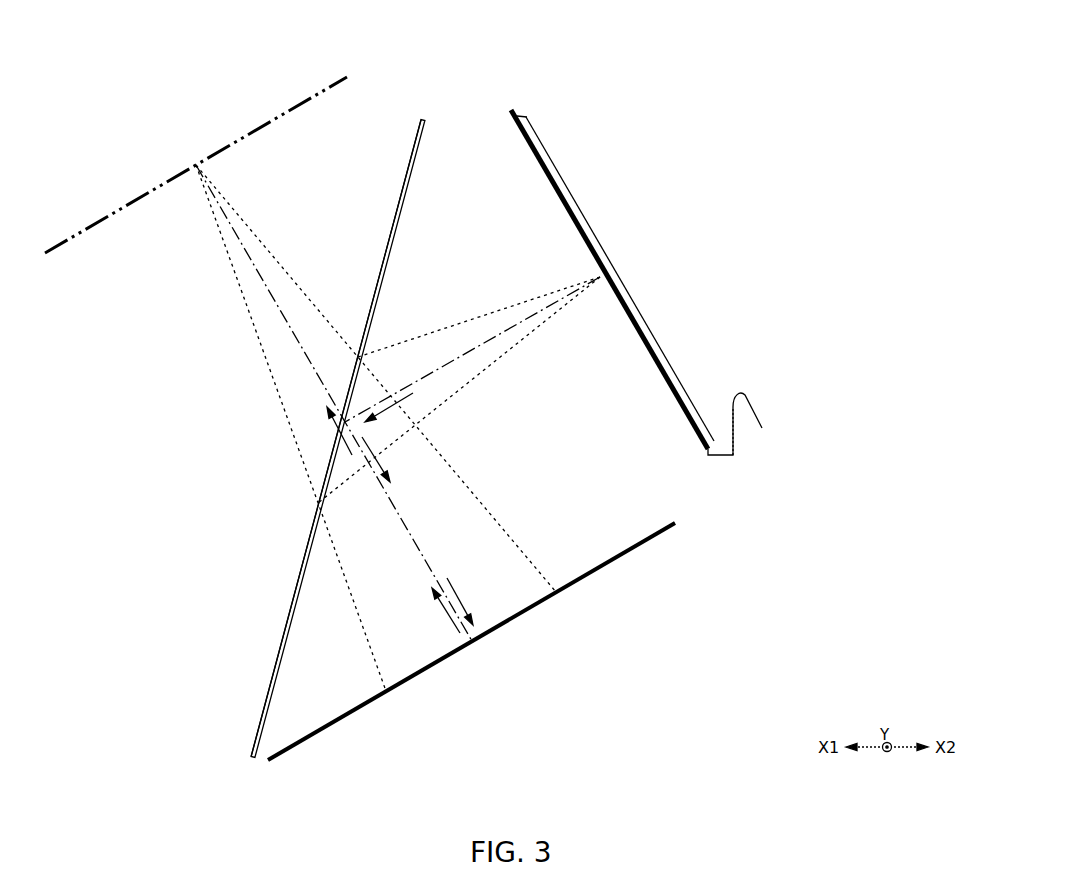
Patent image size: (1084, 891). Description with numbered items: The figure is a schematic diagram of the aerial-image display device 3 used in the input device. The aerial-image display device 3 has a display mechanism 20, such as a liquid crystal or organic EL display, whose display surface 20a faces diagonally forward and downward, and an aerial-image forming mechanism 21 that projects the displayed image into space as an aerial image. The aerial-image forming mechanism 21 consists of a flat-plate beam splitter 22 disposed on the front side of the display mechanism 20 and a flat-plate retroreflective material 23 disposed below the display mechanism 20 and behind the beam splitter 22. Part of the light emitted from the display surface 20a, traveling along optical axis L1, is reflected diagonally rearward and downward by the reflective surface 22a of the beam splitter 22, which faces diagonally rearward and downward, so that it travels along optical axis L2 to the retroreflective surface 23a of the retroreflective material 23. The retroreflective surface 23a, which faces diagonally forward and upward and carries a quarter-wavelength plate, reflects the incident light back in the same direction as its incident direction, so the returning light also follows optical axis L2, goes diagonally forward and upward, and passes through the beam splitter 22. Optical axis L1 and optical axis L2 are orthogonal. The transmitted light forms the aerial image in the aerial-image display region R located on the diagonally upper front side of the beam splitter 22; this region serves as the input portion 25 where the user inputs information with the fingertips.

The aerial-image display device 3 is at (717, 85).
The display mechanism 20 is at (621, 282).
The display surface 20a is at (557, 193).
The aerial-image forming mechanism 21 is at (175, 496).
The beam splitter 22 is at (408, 176).
The reflective surface 22a is at (390, 255).
The retroreflective material 23 is at (587, 577).
The retroreflective surface 23a is at (622, 555).
The input portion 25 is at (97, 220).
The aerial-image display region R is at (273, 118).
The optical axis of light emitted from display surface L1 is at (502, 335).
The optical axis of light reflected by beam splitter L2 is at (410, 533).